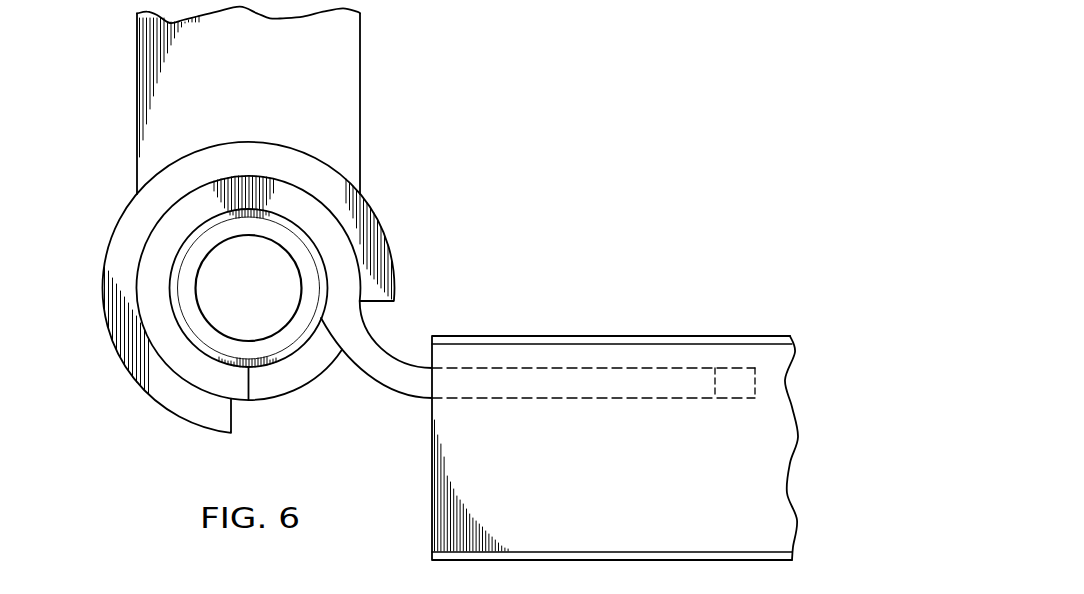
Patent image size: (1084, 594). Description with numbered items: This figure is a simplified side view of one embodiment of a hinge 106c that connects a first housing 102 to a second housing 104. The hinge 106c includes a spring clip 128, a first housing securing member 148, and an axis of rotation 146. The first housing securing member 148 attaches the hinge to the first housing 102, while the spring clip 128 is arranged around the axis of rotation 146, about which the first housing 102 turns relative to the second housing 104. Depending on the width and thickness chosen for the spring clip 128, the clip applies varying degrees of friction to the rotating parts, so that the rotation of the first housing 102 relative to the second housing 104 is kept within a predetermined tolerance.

The first housing 102 is at (137, 65).
The second housing 104 is at (610, 335).
The hinge 106c is at (297, 268).
The spring clip 128 is at (248, 147).
The axis of rotation 146 is at (287, 338).
The first housing securing member 148 is at (402, 387).